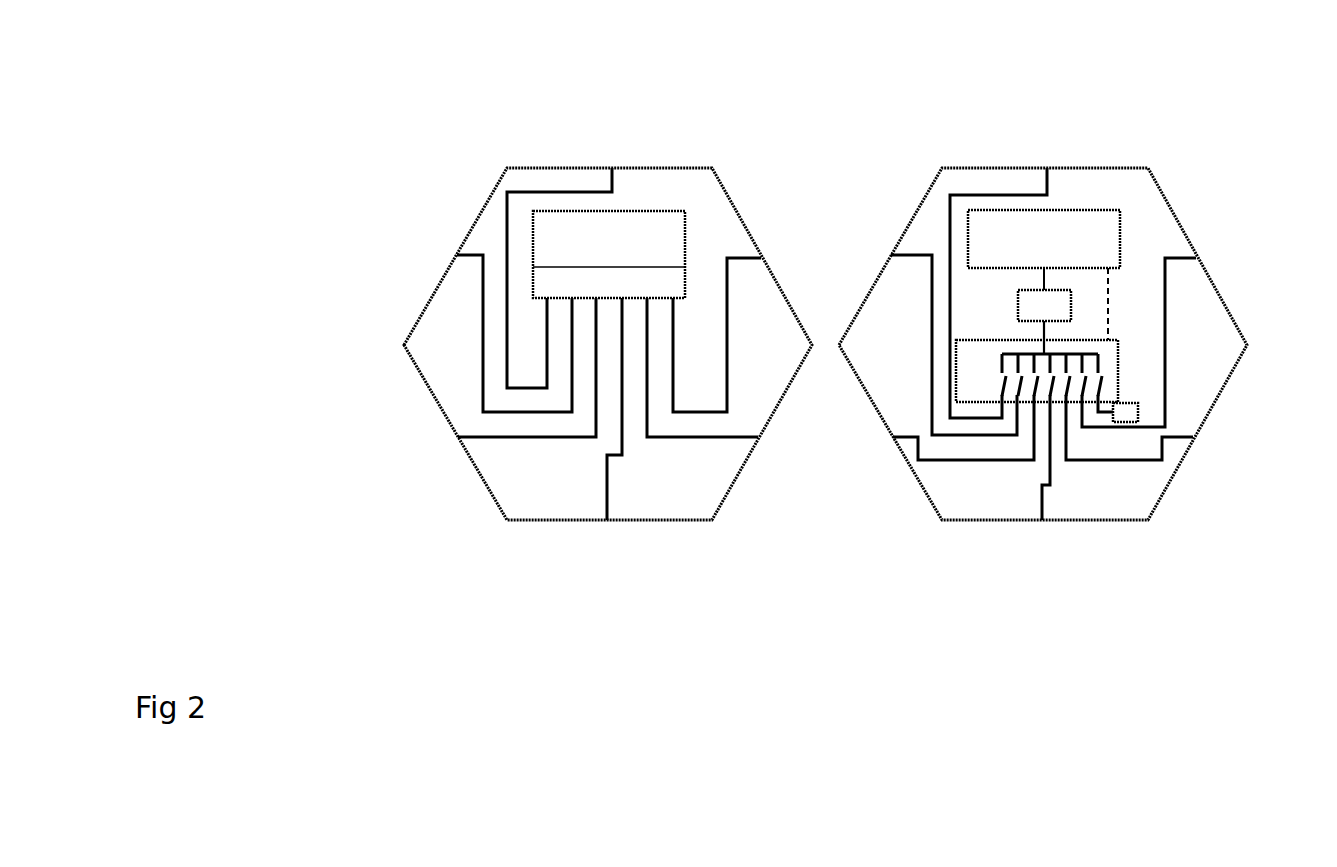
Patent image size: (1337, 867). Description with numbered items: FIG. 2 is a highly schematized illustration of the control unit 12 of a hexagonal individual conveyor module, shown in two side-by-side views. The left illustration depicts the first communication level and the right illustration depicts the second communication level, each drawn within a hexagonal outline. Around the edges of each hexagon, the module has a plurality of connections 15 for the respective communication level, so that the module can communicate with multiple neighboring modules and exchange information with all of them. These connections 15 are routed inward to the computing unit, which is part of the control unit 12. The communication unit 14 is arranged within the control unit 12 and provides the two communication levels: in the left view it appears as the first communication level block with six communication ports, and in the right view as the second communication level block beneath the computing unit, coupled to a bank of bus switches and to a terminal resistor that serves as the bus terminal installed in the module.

The control unit 12 is at (814, 43).
The communication unit 14 is at (1020, 290).
The connections 15 is at (618, 540).